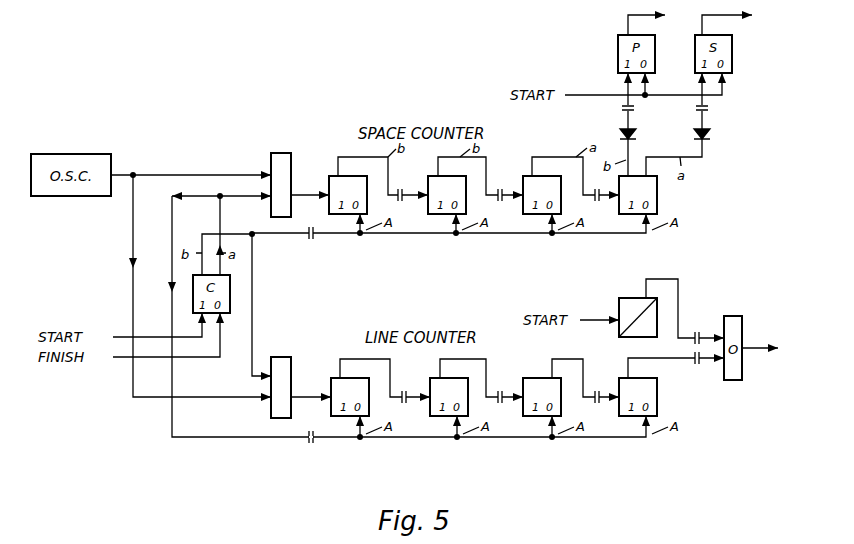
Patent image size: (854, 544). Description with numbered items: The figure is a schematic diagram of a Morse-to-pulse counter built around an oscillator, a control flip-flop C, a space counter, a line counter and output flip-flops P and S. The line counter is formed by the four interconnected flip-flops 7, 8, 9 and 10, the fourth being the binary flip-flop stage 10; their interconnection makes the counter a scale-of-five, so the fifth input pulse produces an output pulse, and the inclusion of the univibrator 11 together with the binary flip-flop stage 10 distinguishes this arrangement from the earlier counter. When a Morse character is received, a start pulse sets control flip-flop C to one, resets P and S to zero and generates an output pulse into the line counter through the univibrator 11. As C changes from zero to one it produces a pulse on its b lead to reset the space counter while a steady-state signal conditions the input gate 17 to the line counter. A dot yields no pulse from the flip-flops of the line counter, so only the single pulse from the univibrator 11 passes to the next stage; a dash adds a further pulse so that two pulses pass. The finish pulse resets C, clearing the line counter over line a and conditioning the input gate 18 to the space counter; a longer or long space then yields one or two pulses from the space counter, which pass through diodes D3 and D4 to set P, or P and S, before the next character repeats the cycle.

The flip-flop 7 is at (340, 382).
The flip-flop 8 is at (438, 382).
The flip-flop 9 is at (539, 382).
The binary flip-flop stage 10 is at (628, 382).
The univibrator 11 is at (628, 305).
The input gate 17 is at (284, 361).
The input gate 18 is at (284, 158).
The diode D3 is at (637, 134).
The diode D4 is at (711, 134).